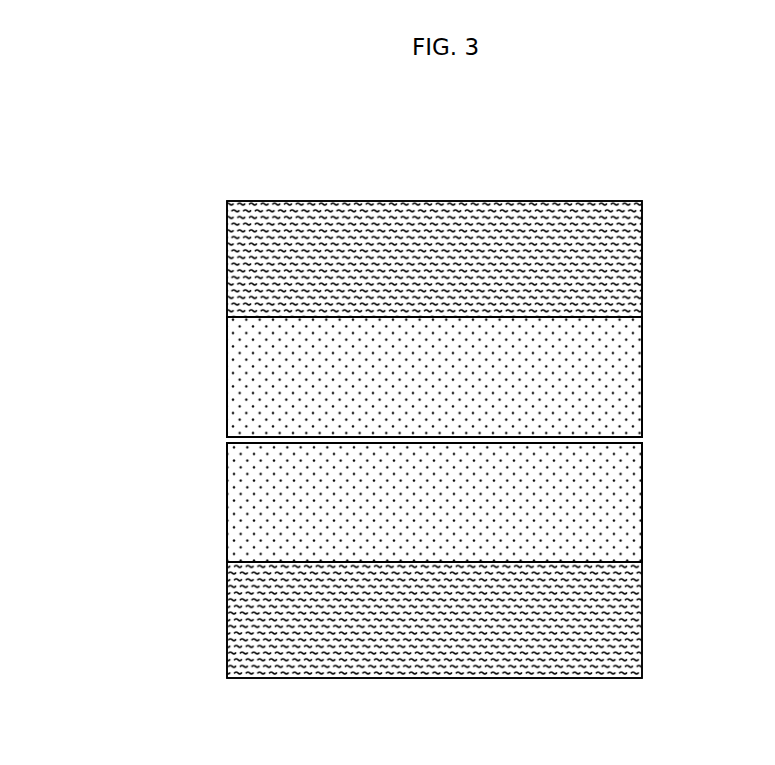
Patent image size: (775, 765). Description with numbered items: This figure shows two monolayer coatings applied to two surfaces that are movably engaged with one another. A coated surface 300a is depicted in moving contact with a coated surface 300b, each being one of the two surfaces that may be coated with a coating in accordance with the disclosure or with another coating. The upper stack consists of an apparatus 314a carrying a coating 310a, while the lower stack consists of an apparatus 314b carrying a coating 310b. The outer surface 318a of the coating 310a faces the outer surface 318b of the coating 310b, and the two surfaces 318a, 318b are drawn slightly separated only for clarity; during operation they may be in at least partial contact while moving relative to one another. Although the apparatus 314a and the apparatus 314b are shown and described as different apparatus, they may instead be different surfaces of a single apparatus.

The coated surface 300a is at (131, 172).
The coated surface 300b is at (156, 661).
The coating 310a is at (222, 317).
The coating 310b is at (647, 443).
The apparatus 314a is at (642, 262).
The apparatus 314b is at (642, 622).
The surface 318a is at (273, 450).
The surface 318b is at (598, 430).